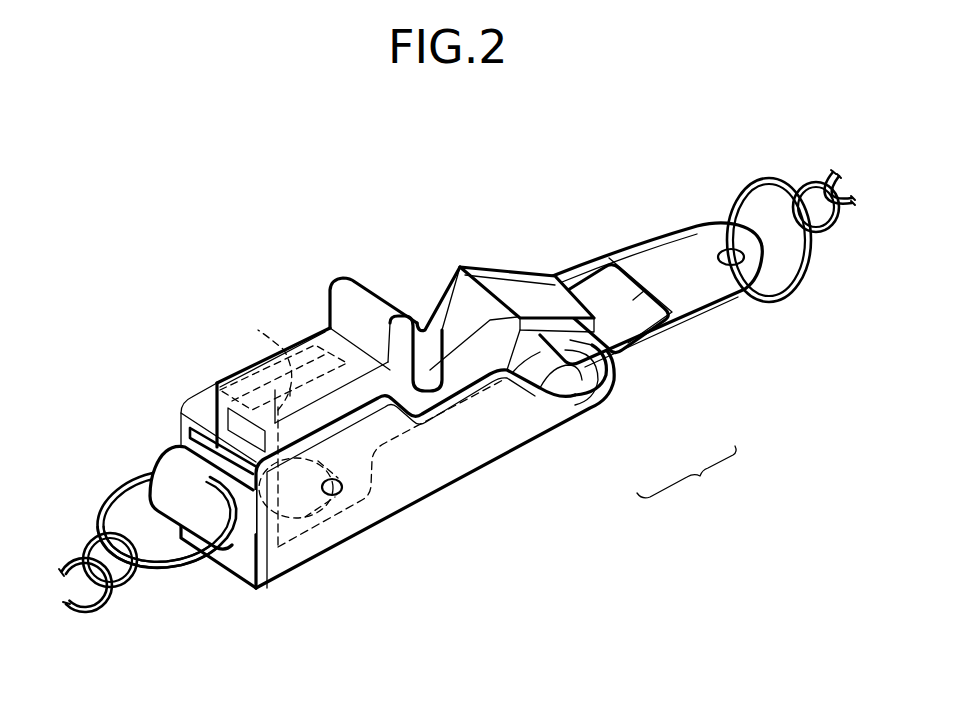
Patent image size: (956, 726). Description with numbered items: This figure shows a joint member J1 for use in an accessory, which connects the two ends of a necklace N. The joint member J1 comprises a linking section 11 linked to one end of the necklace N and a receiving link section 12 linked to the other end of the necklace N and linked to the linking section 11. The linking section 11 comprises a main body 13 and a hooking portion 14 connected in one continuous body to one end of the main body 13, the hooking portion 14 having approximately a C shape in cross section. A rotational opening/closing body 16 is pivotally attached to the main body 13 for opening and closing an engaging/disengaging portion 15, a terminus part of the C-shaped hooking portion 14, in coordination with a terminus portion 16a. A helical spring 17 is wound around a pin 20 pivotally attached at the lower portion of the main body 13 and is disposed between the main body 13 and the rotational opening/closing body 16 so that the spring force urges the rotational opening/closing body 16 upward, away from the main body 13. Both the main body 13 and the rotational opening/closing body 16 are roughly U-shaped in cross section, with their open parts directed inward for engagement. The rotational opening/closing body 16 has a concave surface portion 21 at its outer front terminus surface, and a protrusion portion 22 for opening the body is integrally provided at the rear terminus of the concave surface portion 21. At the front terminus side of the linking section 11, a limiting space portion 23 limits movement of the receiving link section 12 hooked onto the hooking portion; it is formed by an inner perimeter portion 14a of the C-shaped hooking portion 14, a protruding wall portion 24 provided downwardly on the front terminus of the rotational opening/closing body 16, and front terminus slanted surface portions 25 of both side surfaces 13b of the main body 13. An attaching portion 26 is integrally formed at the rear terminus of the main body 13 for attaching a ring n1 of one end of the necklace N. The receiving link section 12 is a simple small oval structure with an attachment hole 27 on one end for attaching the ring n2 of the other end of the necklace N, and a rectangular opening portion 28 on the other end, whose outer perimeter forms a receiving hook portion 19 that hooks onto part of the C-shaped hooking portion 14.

The linking section 11 is at (553, 438).
The receiving link section 12 is at (708, 325).
The main body 13 is at (424, 508).
The side surfaces 13b is at (200, 410).
The hooking portion 14 is at (537, 287).
The inner perimeter portion 14a is at (593, 375).
The engaging/disengaging portion 15 is at (480, 287).
The rotational opening/closing body 16 is at (306, 325).
The terminus portion 16a is at (467, 300).
The helical spring 17 is at (277, 383).
The receiving hook portion 19 is at (598, 343).
The pin 20 is at (333, 496).
The concave surface portion 21 is at (430, 335).
The protrusion portion 22 is at (343, 292).
The limiting space portion 23 is at (590, 380).
The protruding wall portion 24 is at (530, 375).
The front terminus slanted surface portions 25 is at (557, 367).
The attaching portion 26 is at (175, 467).
The attachment hole 27 is at (737, 273).
The opening portion 28 is at (633, 300).
The joint member J1 is at (686, 480).
The necklace N is at (65, 555).
The ring n1 is at (173, 565).
The ring n2 is at (743, 193).